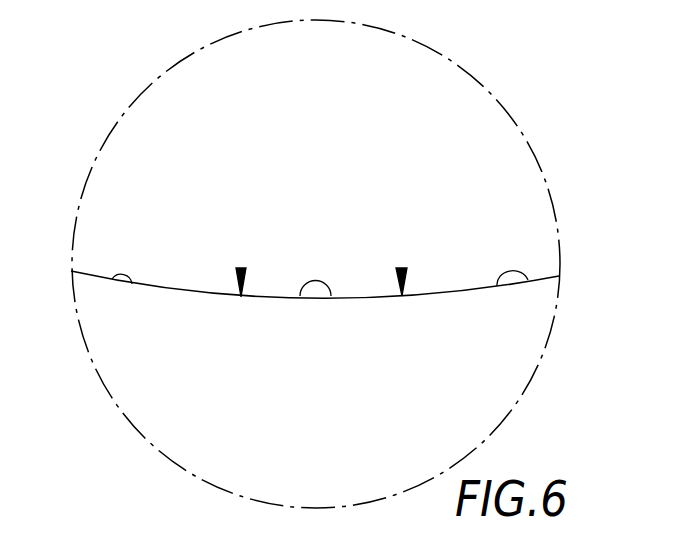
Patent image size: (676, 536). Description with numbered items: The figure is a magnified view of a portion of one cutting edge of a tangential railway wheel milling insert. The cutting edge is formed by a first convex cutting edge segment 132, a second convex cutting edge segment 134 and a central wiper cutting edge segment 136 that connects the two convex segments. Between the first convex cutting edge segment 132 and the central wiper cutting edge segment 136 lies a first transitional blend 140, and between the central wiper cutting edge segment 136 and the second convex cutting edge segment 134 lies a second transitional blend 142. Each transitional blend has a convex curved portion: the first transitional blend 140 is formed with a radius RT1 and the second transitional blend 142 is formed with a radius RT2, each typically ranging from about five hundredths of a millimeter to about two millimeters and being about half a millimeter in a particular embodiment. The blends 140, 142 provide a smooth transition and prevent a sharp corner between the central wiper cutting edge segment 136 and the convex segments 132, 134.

The first convex cutting edge segment 132 is at (132, 284).
The second convex cutting edge segment 134 is at (497, 286).
The central wiper cutting edge segment 136 is at (331, 296).
The first transitional blend 140 is at (241, 297).
The second transitional blend 142 is at (402, 296).
The first transitional blend radius RT1 is at (241, 268).
The second transitional blend radius RT2 is at (401, 268).